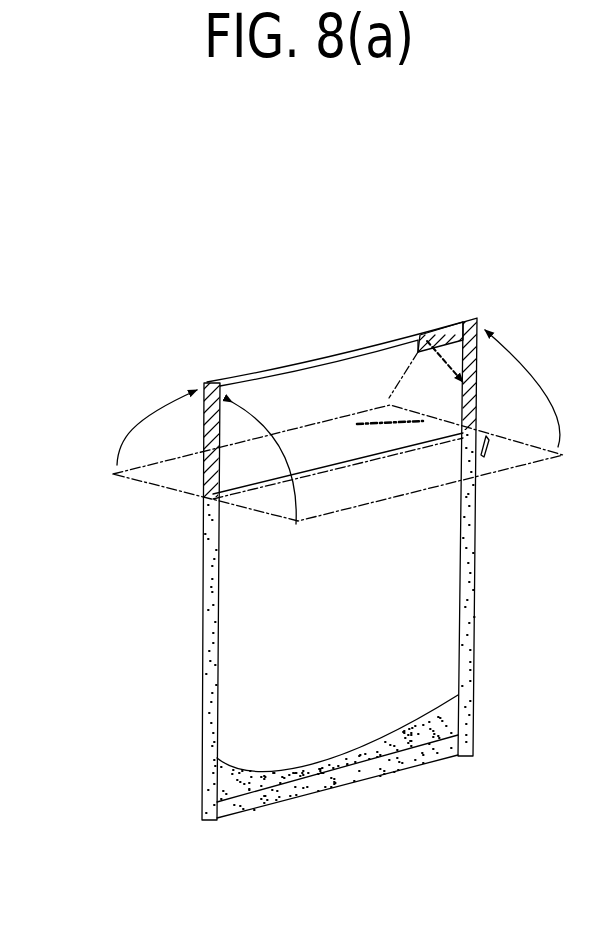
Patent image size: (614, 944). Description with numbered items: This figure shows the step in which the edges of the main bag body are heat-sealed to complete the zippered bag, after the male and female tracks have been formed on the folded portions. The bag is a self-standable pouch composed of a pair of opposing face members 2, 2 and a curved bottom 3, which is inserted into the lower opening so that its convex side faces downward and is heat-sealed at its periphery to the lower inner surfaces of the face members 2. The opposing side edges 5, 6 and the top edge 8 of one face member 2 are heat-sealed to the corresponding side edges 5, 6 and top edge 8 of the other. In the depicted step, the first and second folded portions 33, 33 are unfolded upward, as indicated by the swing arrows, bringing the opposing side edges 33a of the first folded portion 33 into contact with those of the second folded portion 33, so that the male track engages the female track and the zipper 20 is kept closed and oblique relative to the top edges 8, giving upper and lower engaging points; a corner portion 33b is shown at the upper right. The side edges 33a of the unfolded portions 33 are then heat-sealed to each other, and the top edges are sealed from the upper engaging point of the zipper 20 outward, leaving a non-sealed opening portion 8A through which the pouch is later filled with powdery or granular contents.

The face member 2 is at (327, 690).
The curved bottom 3 is at (263, 772).
The side edge 5 is at (472, 583).
The side edge 6 is at (208, 640).
The top edge 8 is at (301, 360).
The non-sealed opening portion 8A is at (333, 352).
The zipper 20 is at (442, 362).
The folded portion 33 is at (185, 482).
The side portions of fold-over flap 33a is at (210, 436).
The corner portion of flap 33b is at (447, 330).